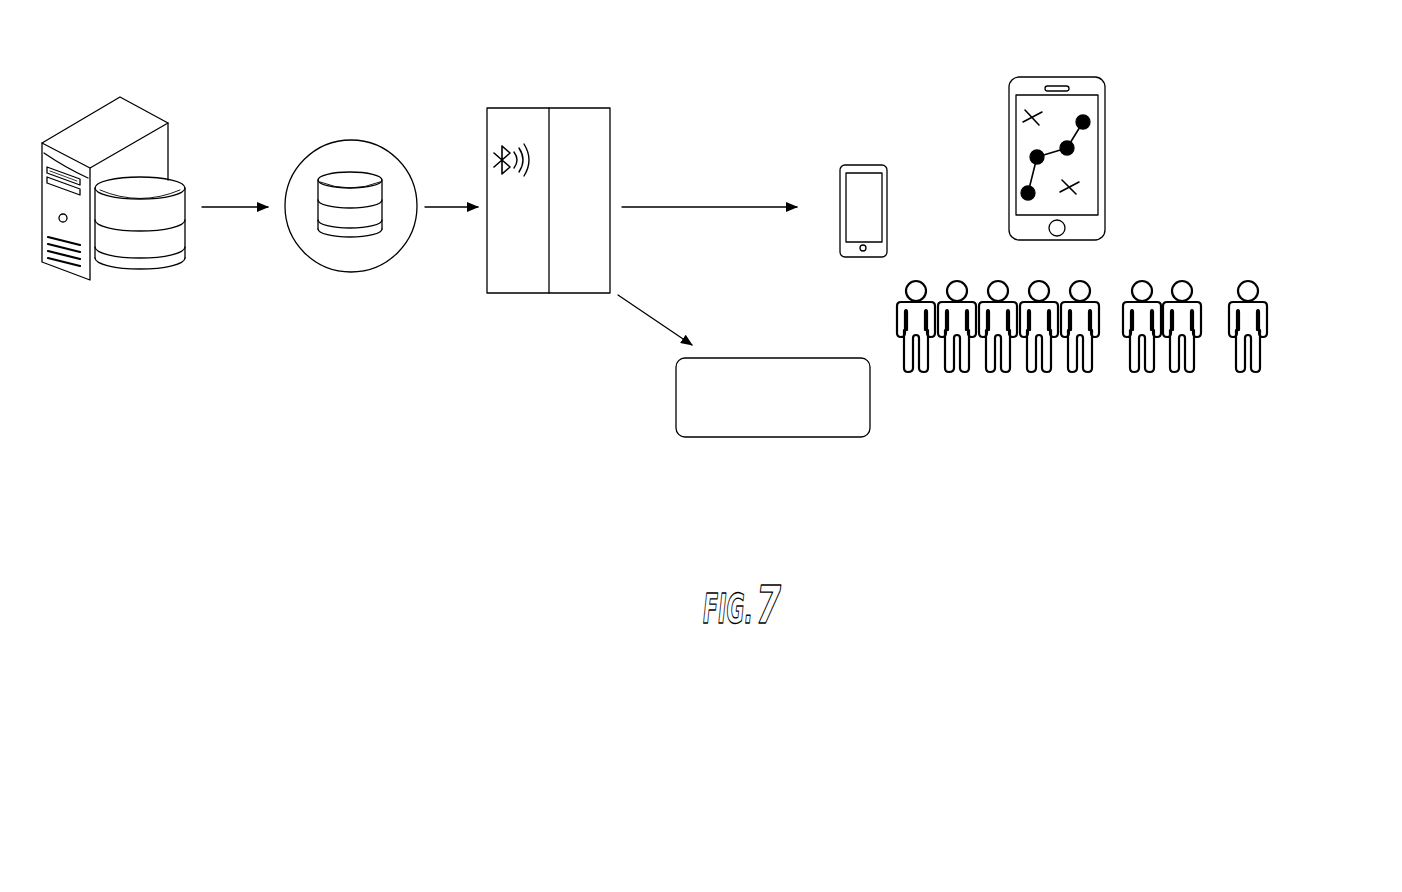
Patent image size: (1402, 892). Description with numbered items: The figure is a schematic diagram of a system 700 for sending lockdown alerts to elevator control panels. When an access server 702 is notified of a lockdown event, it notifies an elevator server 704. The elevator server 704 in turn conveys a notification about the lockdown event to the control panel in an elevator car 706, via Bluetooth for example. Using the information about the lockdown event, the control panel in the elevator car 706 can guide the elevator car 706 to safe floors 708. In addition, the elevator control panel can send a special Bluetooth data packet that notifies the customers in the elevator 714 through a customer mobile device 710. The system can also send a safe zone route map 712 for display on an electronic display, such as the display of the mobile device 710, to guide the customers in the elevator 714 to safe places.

The system 700 is at (1345, 127).
The access server 702 is at (110, 331).
The elevator server 704 is at (357, 331).
The elevator car 706 is at (542, 345).
The safe floors 708 is at (797, 437).
The customer mobile device 710 is at (848, 124).
The safe zone route map 712 is at (1183, 148).
The customers in the elevator 714 is at (1072, 422).